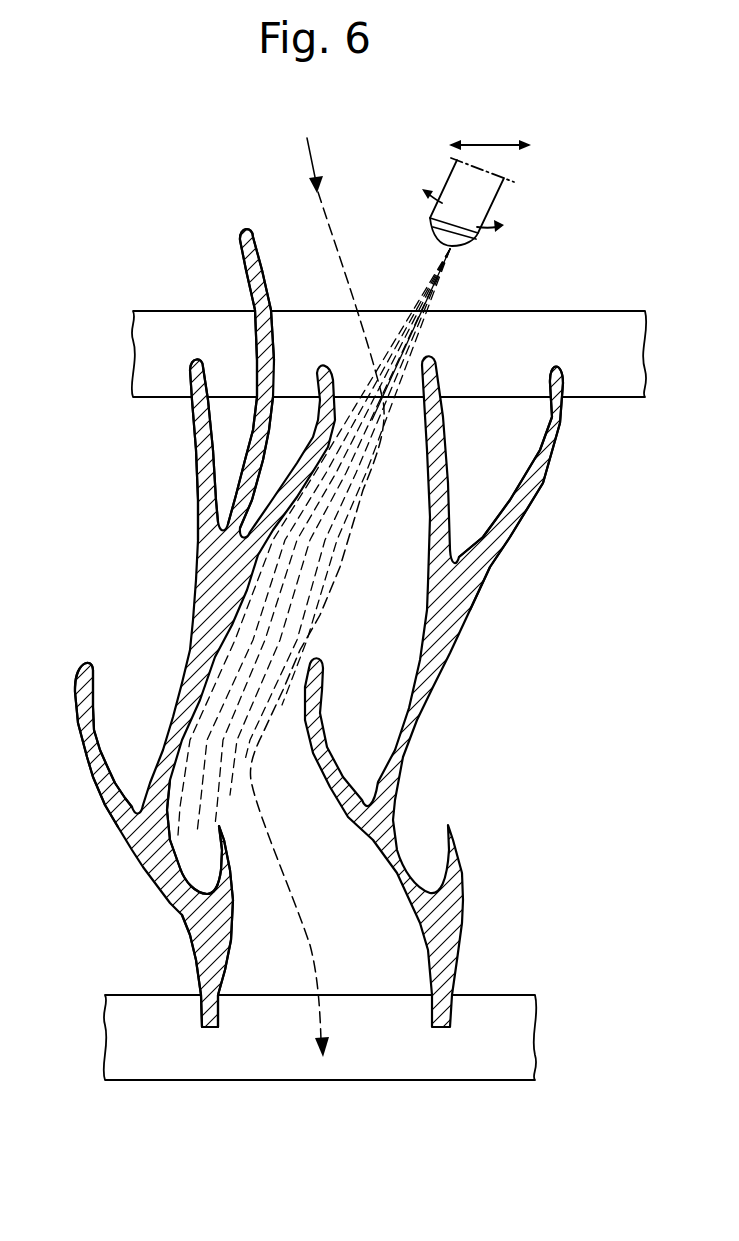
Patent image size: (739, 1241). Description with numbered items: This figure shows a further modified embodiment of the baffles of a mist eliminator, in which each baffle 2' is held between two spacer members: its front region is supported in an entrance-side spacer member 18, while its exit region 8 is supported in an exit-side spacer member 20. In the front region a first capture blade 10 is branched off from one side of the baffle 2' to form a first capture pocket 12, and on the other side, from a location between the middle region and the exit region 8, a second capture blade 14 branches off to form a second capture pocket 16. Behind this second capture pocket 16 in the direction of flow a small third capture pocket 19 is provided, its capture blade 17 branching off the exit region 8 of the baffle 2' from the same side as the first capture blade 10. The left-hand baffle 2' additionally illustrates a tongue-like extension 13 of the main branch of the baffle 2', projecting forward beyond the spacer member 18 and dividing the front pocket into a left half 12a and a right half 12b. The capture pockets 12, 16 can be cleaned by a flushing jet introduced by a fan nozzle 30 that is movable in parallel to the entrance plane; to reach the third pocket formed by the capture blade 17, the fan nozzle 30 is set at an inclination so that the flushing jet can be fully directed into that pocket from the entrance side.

The baffle 2' is at (181, 619).
The exit region 8 is at (208, 962).
The first capture blade 10 is at (562, 427).
The first capture pocket 12 is at (475, 515).
The left half of front pocket 12a is at (227, 433).
The right half of front pocket 12b is at (263, 497).
The tongue-like extension 13 is at (252, 247).
The second capture blade 14 is at (82, 680).
The second capture pocket 16 is at (128, 775).
The third capture blade 17 is at (223, 848).
The entrance-side spacer member 18 is at (176, 322).
The third capture pocket 19 is at (205, 888).
The exit-side spacer member 20 is at (168, 1053).
The fan nozzle 30 is at (482, 195).